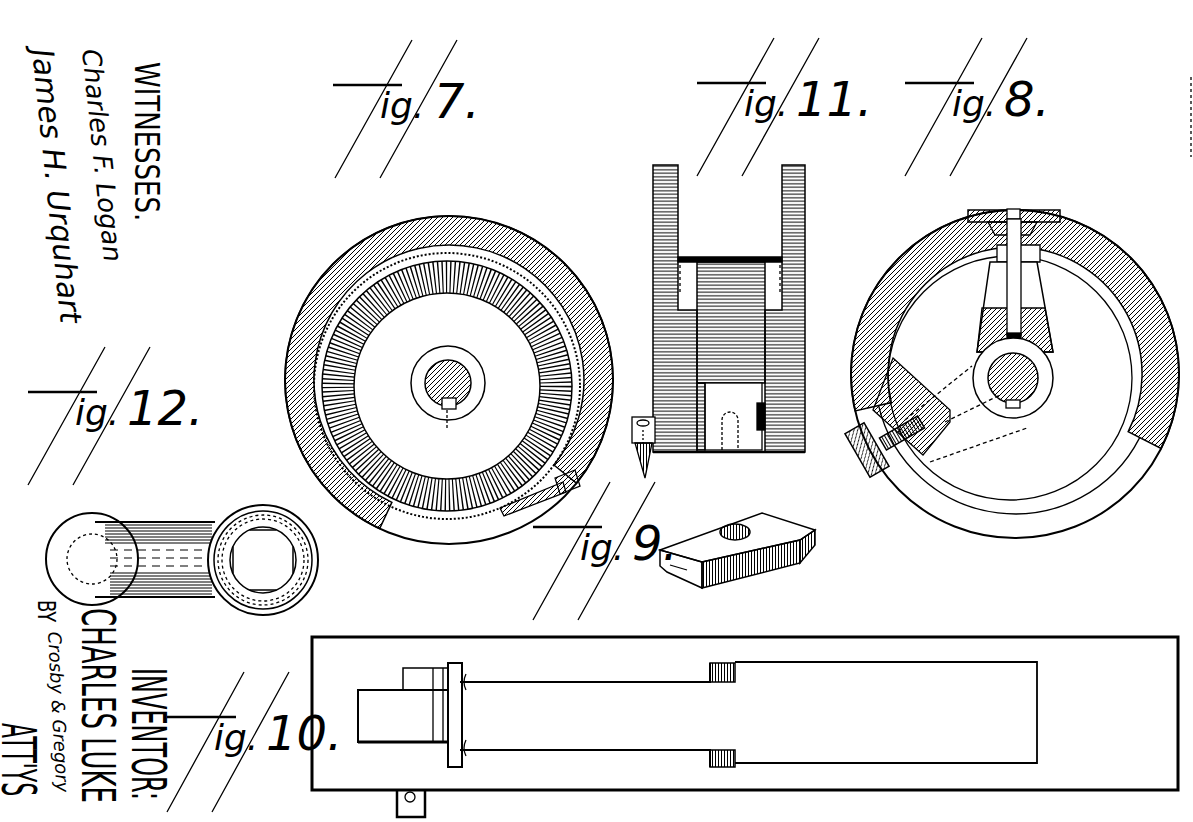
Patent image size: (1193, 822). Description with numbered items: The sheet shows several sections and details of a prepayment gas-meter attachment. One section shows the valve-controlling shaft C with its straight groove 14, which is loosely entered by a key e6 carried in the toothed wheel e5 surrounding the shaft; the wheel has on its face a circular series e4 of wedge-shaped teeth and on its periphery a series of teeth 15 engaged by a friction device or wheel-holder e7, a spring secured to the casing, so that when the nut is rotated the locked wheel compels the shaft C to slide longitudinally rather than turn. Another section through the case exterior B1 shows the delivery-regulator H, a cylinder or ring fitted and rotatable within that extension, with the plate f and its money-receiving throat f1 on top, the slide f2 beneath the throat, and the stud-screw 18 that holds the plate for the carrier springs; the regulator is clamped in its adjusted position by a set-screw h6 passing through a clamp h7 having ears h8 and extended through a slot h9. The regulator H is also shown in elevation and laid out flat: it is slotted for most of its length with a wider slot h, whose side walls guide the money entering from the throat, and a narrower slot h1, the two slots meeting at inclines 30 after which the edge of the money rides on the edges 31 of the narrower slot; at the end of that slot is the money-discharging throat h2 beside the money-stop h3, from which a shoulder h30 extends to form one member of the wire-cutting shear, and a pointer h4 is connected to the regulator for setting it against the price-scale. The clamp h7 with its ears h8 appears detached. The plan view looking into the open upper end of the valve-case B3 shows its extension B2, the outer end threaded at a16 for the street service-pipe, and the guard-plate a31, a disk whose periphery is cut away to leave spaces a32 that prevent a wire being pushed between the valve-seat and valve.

In FIG. 7, the exterior of the case B1 is at (312, 297).
In FIG. 8, the exterior of the case B1 is at (925, 250).
In FIG. 7, the peripheral teeth 15 is at (552, 312).
In FIG. 7, the toothed wheel e5 is at (510, 273).
In FIG. 7, the circular series of wedge-shaped teeth e4 is at (537, 297).
In FIG. 7, the shaft C is at (443, 367).
In FIG. 8, the shaft C is at (1038, 378).
In FIG. 7, the straight groove 14 is at (428, 393).
In FIG. 8, the straight groove 14 is at (1013, 408).
In FIG. 7, the key e6 is at (450, 413).
In FIG. 7, the friction device or wheel-holder e7 is at (550, 500).
In FIG. 11, the wider slot h is at (729, 308).
In FIG. 8, the wider slot h is at (1145, 390).
In FIG. 10, the wider slot h is at (1005, 662).
In FIG. 11, the delivery-regulator H is at (802, 228).
In FIG. 8, the delivery-regulator H is at (900, 283).
In FIG. 10, the delivery-regulator H is at (536, 647).
In FIG. 11, the edges of the slot 31 is at (768, 282).
In FIG. 10, the edges of the slot 31 is at (697, 684).
In FIG. 11, the narrower slot h1 is at (733, 388).
In FIG. 8, the narrower slot h1 is at (988, 503).
In FIG. 10, the narrower slot h1 is at (585, 715).
In FIG. 11, the shoulder h30 is at (778, 390).
In FIG. 10, the shoulder h30 is at (417, 672).
In FIG. 11, the money-stop h3 is at (723, 414).
In FIG. 8, the money-stop h3 is at (940, 407).
In FIG. 10, the money-stop h3 is at (438, 713).
In FIG. 11, the pointer h4 is at (642, 455).
In FIG. 10, the pointer h4 is at (416, 798).
In FIG. 8, the plate f is at (1032, 210).
In FIG. 8, the money-receiving throat f1 is at (1014, 209).
In FIG. 8, the slide f2 is at (998, 220).
In FIG. 8, the wedge E is at (1038, 309).
In FIG. 8, the stud-screw 18 is at (1024, 340).
In FIG. 8, the inclines 30 is at (1133, 440).
In FIG. 10, the inclines 30 is at (737, 674).
In FIG. 8, the money-discharging throat h2 is at (910, 467).
In FIG. 10, the money-discharging throat h2 is at (472, 715).
In FIG. 8, the set-screw h6 is at (857, 450).
In FIG. 8, the clamp h7 is at (886, 457).
In FIG. 9, the clamp h7 is at (770, 566).
In FIG. 9, the ears h8 is at (836, 541).
In FIG. 8, the slot h9 is at (1070, 522).
In FIG. 12, the extension B2 is at (165, 524).
In FIG. 12, the valve-case B3 is at (261, 617).
In FIG. 12, the spaces a32 is at (261, 530).
In FIG. 12, the guard-plate a31 is at (292, 558).
In FIG. 12, the threaded outer end a16 is at (305, 588).